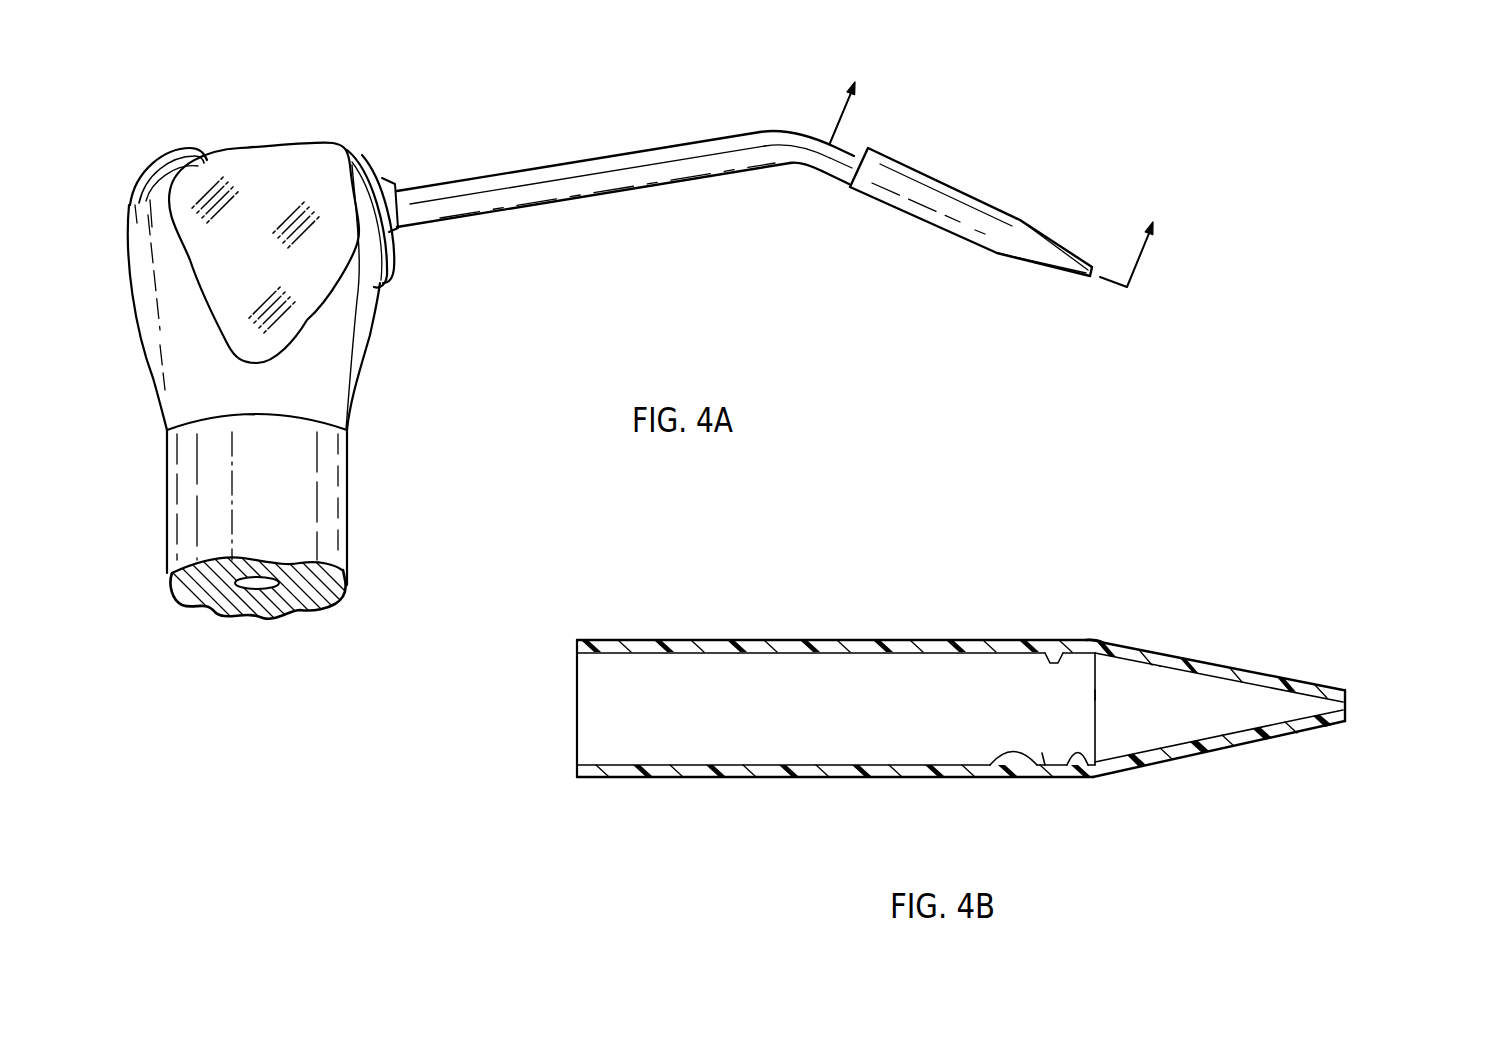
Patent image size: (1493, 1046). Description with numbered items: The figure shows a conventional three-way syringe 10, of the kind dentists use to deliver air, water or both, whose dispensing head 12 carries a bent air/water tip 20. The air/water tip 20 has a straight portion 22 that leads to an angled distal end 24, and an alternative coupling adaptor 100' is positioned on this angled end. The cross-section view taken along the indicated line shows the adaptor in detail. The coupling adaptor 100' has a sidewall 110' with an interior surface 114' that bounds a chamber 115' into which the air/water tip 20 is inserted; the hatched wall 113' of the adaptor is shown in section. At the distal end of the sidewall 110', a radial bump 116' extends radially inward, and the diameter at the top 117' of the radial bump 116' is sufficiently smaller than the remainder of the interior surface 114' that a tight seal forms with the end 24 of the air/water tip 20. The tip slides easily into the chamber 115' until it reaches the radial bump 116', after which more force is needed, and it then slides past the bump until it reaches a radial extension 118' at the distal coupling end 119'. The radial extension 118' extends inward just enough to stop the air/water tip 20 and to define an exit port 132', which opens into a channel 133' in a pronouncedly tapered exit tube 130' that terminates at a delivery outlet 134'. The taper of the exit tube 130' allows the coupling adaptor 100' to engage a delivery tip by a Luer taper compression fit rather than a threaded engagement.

In FIG. 4A, the three-way syringe 10 is at (397, 131).
In FIG. 4A, the dispensing head 12 is at (298, 145).
In FIG. 4A, the air/water tip 20 is at (594, 215).
In FIG. 4A, the straight portion 22 is at (714, 140).
In FIG. 4A, the angled distal end 24 is at (836, 178).
In FIG. 4A, the coupling adaptor 100' is at (971, 191).
In FIG. 4B, the coupling adaptor 100' is at (965, 685).
In FIG. 4B, the sidewall 110' is at (810, 693).
In FIG. 4B, the side wall 113' is at (836, 670).
In FIG. 4B, the interior surface 114' is at (538, 709).
In FIG. 4B, the chamber 115' is at (803, 662).
In FIG. 4B, the radial bump 116' is at (1011, 709).
In FIG. 4B, the top of radial bump 117' is at (955, 681).
In FIG. 4B, the radial extension 118' is at (1112, 799).
In FIG. 4B, the distal coupling end 119' is at (1149, 579).
In FIG. 4B, the exit tube 130' is at (1276, 646).
In FIG. 4B, the exit port 132' is at (1194, 619).
In FIG. 4B, the channel 133' is at (1214, 644).
In FIG. 4B, the delivery outlet 134' is at (1406, 676).